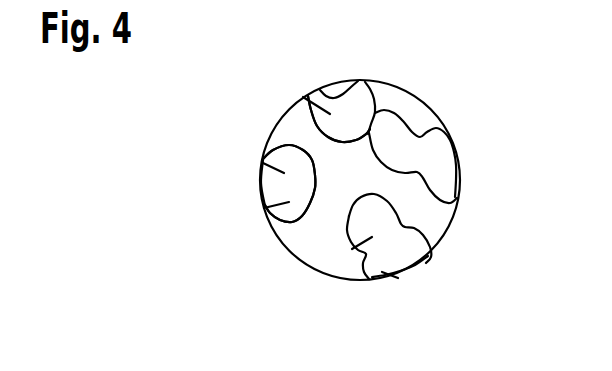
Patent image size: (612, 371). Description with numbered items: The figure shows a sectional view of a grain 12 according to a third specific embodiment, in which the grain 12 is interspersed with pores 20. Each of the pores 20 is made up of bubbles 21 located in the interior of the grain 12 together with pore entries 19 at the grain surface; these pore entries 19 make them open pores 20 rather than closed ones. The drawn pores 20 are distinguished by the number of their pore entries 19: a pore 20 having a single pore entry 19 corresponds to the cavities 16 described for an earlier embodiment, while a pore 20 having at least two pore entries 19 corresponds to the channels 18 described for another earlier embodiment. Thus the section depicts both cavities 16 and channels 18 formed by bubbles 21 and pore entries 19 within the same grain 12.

The grain 12 is at (500, 74).
The cavities 16 is at (263, 163).
The channels 18 is at (307, 98).
The pore entries 19 is at (345, 90).
The pores 20 is at (307, 98).
The bubbles 21 is at (395, 128).